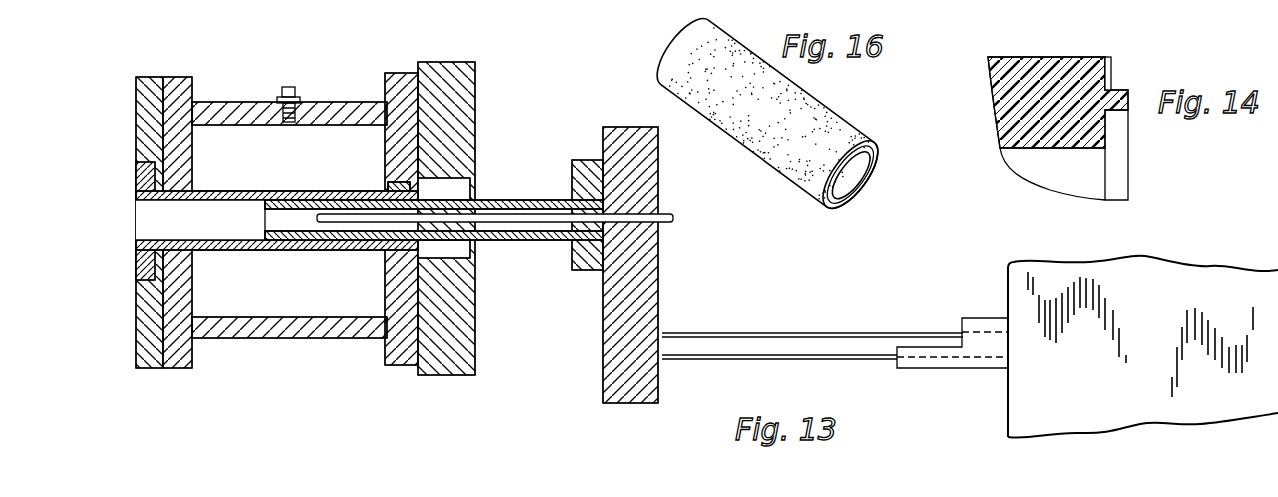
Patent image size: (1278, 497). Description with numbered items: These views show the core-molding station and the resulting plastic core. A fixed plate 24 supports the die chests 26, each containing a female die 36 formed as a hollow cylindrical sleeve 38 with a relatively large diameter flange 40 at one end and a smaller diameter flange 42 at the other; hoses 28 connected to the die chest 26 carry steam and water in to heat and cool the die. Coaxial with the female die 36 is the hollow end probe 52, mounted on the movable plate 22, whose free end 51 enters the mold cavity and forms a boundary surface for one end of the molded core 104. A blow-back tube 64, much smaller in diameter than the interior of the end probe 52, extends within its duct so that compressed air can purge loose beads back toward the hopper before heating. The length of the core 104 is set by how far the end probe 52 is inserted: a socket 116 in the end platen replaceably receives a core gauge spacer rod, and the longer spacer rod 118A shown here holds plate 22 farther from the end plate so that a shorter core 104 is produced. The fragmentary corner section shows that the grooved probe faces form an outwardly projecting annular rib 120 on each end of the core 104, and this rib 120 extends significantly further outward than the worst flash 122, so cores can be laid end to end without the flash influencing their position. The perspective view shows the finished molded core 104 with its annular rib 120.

In FIG. 13, the movable plate 22 is at (613, 332).
In FIG. 13, the fixed plate 24 is at (455, 313).
In FIG. 13, the die chest 26 is at (302, 338).
In FIG. 13, the hose 28 is at (300, 71).
In FIG. 13, the female die 36 is at (266, 185).
In FIG. 13, the hollow cylindrical sleeve 38 is at (203, 191).
In FIG. 13, the relatively large diameter flange 40 is at (138, 270).
In FIG. 13, the smaller diameter flange 42 is at (400, 182).
In FIG. 13, the free end of end probe 51 is at (244, 250).
In FIG. 13, the end probe 52 is at (488, 198).
In FIG. 13, the blow-back tube 64 is at (523, 213).
In FIG. 16, the molded core 104 is at (836, 128).
In FIG. 14, the molded core 104 is at (1003, 101).
In FIG. 13, the socket 116 is at (917, 350).
In FIG. 13, the spacer rod 118A is at (820, 340).
In FIG. 16, the annular rib 120 is at (676, 50).
In FIG. 14, the annular rib 120 is at (1122, 163).
In FIG. 14, the flash 122 is at (1109, 72).